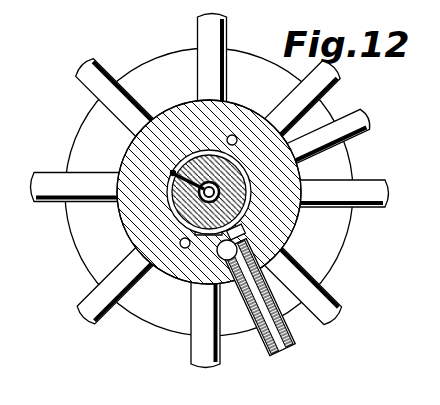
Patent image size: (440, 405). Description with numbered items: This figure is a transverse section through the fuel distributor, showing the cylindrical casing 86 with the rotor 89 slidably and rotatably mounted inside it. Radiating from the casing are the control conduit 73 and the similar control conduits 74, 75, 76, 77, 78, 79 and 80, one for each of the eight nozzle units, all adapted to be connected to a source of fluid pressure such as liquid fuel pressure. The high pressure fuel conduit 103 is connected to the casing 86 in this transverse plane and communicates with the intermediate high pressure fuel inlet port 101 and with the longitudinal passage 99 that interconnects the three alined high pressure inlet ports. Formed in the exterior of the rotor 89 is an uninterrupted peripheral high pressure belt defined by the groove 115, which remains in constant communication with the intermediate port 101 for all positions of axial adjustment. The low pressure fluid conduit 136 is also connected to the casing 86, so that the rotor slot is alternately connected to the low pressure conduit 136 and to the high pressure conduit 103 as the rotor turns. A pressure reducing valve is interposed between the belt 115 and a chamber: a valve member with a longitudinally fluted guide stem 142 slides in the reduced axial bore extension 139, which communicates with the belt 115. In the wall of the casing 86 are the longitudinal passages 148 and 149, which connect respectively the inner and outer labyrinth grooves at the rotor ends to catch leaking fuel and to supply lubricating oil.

The control conduit 73 is at (222, 344).
The control conduit 74 is at (121, 293).
The control conduit 75 is at (50, 203).
The control conduit 76 is at (127, 113).
The control conduit 77 is at (209, 76).
The control conduit 78 is at (302, 89).
The control conduit 79 is at (370, 181).
The control conduit 80 is at (336, 303).
The cylindrical casing 86 is at (284, 242).
The rotor 89 is at (171, 205).
The longitudinal passage 99 is at (232, 282).
The intermediate high pressure fuel inlet port 101 is at (236, 233).
The high pressure fuel conduit 103 is at (264, 340).
The high pressure belt groove 115 is at (251, 175).
The low pressure fluid conduit 136 is at (350, 130).
The reduced axial bore extension 139 is at (172, 171).
The fluted guide stem 142 is at (172, 174).
The longitudinal passage 148 is at (183, 249).
The longitudinal passage 149 is at (234, 136).